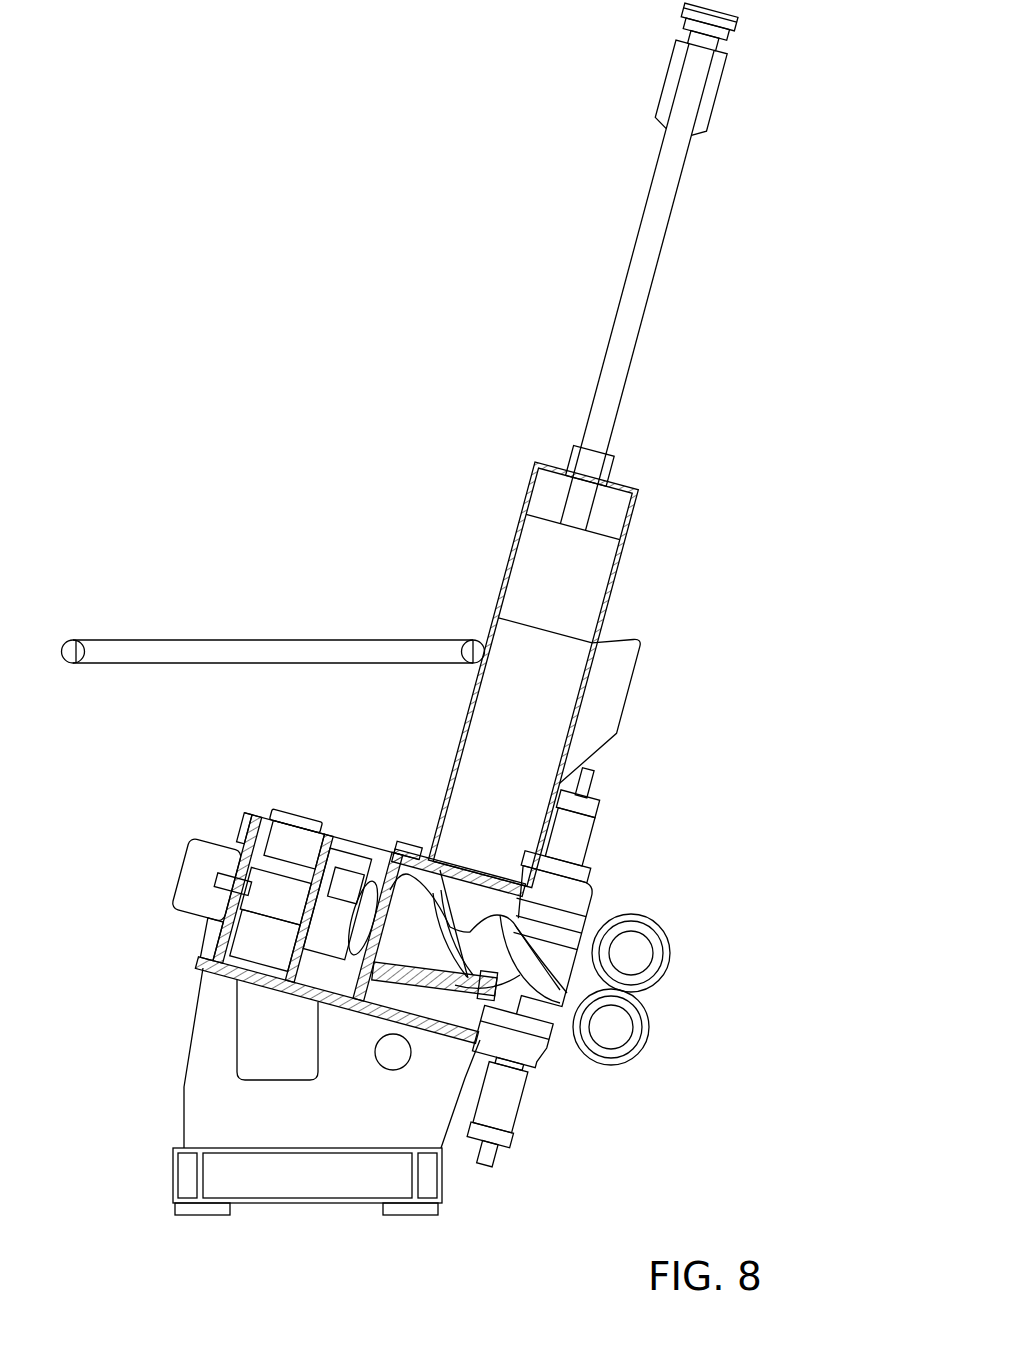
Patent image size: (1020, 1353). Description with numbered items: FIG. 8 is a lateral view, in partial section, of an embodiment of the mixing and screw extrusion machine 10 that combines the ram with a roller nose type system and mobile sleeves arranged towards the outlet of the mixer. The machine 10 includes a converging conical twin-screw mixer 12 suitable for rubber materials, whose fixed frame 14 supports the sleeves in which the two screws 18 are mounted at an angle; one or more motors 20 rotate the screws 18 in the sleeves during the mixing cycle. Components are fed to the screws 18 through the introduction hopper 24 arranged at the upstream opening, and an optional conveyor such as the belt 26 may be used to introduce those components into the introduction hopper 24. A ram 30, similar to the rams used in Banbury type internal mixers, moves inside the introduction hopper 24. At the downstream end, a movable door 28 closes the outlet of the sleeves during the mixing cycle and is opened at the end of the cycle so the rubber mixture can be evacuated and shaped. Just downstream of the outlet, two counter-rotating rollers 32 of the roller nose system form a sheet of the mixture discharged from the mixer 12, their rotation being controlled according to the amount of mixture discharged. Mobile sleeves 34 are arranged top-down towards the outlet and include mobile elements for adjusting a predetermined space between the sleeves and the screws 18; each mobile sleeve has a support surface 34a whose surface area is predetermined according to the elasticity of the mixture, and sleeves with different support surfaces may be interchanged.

The mixing and screw extrusion machine 10 is at (247, 345).
The converging conical twin-screw mixer 12 is at (200, 965).
The fixed frame 14 is at (192, 1105).
The screws 18 is at (470, 930).
The motor 20 is at (190, 862).
The introduction hopper 24 is at (462, 712).
The belt 26 is at (122, 640).
The movable door 28 is at (590, 915).
The ram 30 is at (597, 548).
The counter-rotating rollers 32 is at (640, 1035).
The mobile sleeves 34 is at (570, 868).
The support surface 34a is at (474, 1036).